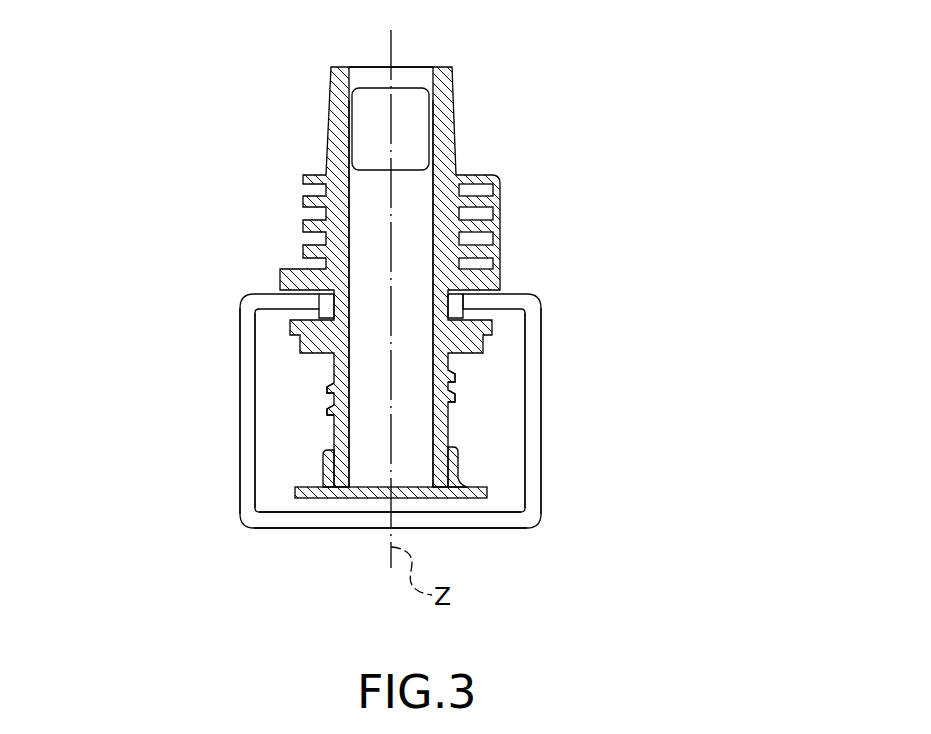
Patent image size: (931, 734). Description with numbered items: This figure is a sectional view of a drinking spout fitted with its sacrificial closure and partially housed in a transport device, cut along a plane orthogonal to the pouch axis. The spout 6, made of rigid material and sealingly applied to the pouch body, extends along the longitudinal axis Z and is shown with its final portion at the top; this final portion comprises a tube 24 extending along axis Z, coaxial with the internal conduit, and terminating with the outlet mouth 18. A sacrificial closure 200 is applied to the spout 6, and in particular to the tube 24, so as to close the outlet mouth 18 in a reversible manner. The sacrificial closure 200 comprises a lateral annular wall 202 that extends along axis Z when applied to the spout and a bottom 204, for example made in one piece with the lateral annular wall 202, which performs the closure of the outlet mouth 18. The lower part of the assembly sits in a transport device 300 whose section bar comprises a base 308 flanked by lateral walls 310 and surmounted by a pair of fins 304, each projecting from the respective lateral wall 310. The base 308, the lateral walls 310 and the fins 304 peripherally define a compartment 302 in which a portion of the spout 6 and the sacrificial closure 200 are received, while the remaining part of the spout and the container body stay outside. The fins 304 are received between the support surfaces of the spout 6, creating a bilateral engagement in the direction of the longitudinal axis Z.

The spout 6 is at (280, 170).
The outlet mouth 18 is at (410, 486).
The tube 24 is at (330, 434).
The sacrificial closure 200 is at (468, 467).
The lateral annular wall 202 is at (328, 467).
The bottom 204 is at (445, 493).
The transport device 300 is at (560, 322).
The compartment 302 is at (282, 467).
The fins 304 is at (287, 305).
The base 308 is at (342, 522).
The lateral walls 310 is at (248, 368).